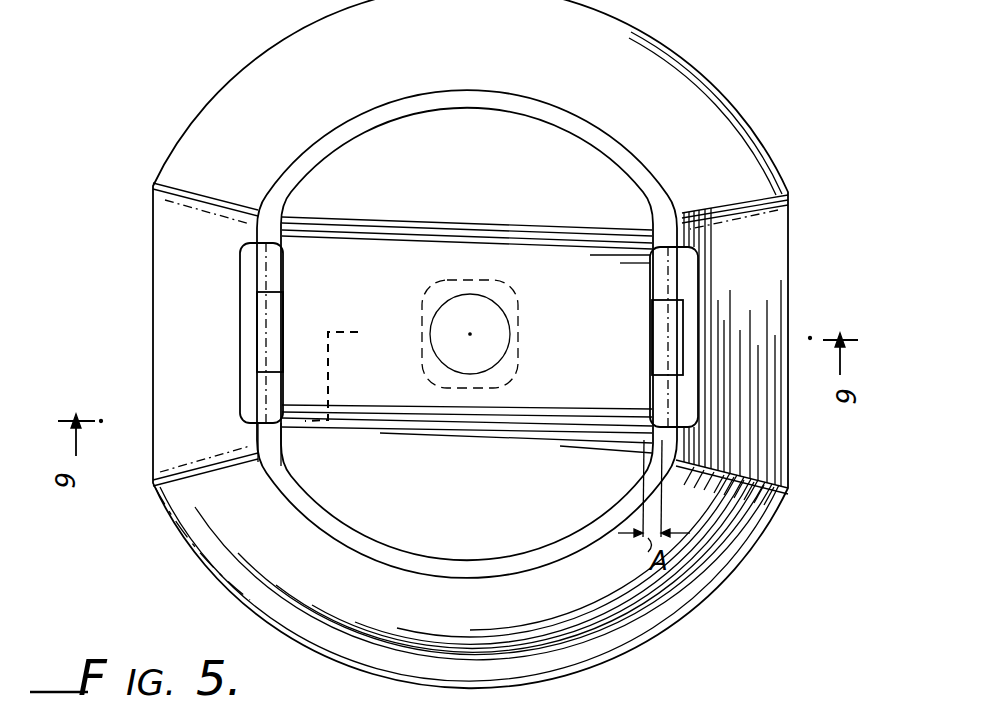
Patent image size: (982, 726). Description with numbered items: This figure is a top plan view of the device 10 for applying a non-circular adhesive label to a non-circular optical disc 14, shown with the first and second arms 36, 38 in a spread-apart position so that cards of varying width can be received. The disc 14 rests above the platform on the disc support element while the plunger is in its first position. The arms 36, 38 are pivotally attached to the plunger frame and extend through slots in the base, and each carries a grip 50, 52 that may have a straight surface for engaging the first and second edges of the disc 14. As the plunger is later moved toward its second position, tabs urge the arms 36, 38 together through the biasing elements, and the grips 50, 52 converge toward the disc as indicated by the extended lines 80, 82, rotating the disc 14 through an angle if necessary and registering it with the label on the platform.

The device 10 is at (798, 151).
The non-circular optical disc 14 is at (536, 247).
The first arm 36 is at (668, 266).
The second arm 38 is at (247, 263).
The grip 50 is at (652, 282).
The grip 52 is at (284, 262).
The extended line 80 is at (656, 497).
The extended line 82 is at (291, 452).